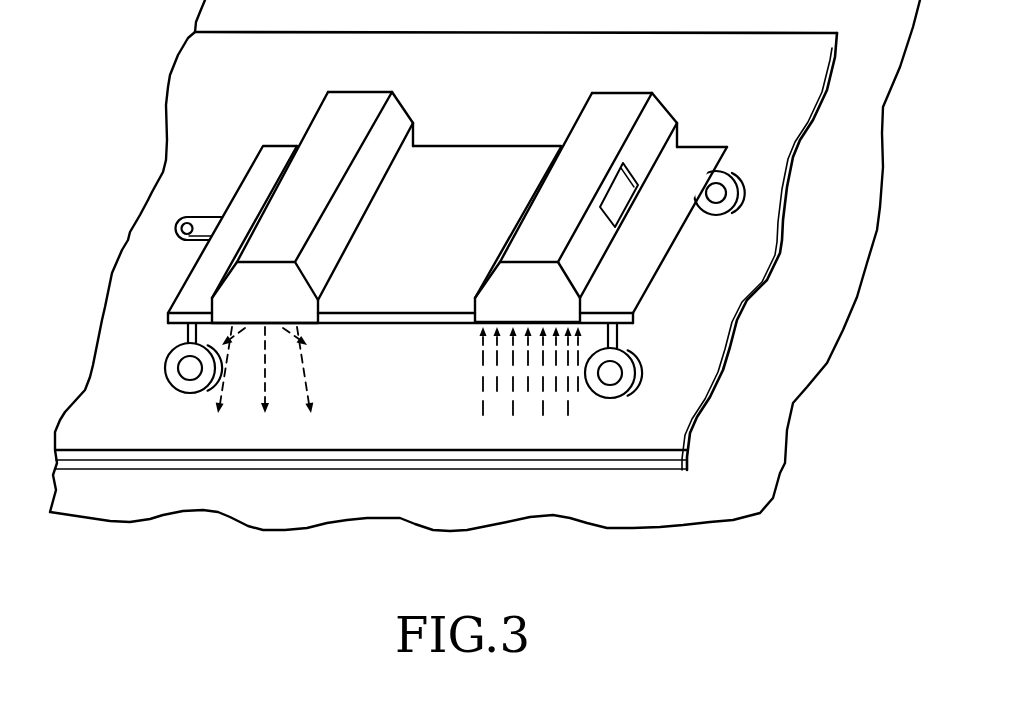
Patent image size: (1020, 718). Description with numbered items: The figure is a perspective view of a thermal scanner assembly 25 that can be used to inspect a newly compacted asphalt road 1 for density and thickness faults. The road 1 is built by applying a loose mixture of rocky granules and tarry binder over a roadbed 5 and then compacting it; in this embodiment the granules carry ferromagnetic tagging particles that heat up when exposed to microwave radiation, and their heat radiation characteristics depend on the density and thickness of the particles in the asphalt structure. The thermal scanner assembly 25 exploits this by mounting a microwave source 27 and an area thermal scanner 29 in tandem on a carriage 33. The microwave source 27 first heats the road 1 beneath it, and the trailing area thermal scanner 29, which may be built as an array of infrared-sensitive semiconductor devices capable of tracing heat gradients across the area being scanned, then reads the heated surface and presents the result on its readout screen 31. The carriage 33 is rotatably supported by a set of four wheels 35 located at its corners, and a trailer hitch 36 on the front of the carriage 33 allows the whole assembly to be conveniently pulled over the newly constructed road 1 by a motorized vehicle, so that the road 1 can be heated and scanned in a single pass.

The road 1 is at (208, 75).
The roadbed 5 is at (827, 215).
The thermal scanner assembly 25 is at (502, 135).
The microwave source 27 is at (313, 157).
The area thermal scanner 29 is at (555, 198).
The readout screen 31 is at (626, 166).
The carriage 33 is at (422, 300).
The wheels 35 is at (610, 374).
The trailer hitch 36 is at (195, 215).